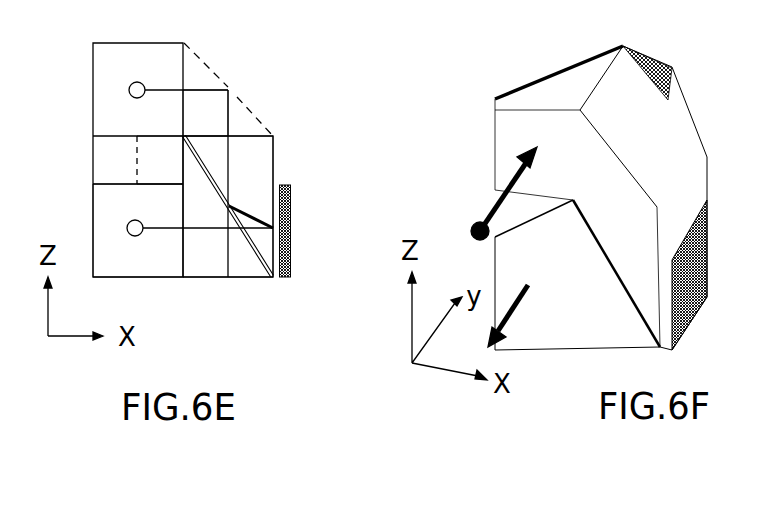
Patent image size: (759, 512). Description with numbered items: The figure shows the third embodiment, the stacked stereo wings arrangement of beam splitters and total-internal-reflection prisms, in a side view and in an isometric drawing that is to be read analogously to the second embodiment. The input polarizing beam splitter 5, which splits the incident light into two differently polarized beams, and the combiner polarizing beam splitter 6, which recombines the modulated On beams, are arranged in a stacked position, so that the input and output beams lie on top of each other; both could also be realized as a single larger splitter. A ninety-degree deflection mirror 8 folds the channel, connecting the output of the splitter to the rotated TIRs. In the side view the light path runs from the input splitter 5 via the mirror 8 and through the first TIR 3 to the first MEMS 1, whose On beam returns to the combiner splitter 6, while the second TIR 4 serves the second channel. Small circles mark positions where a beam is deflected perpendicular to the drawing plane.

The MEMS 1 is at (297, 231).
The TIR 1 3 is at (228, 206).
The TIR 2 4 is at (160, 159).
The PBS 1 5 is at (196, 113).
The PBS 2 6 is at (138, 230).
The deflection mirror or TIR 8 is at (228, 89).